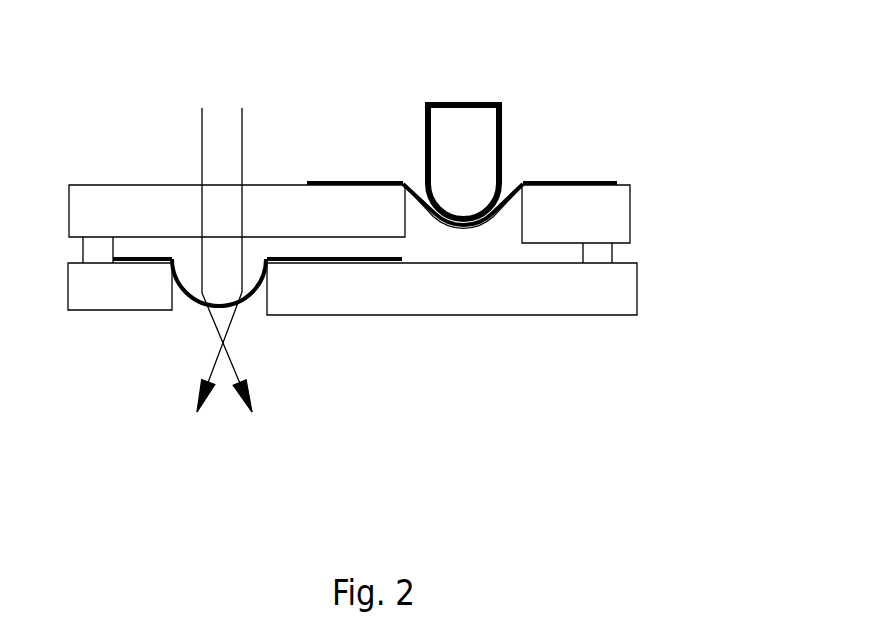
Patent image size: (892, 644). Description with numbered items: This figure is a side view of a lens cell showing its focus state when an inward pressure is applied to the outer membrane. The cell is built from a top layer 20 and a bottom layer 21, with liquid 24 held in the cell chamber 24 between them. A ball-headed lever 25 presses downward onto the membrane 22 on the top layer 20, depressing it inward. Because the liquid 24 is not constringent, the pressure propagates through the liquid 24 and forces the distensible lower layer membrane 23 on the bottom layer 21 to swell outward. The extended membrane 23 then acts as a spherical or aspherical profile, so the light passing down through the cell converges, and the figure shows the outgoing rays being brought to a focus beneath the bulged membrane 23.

The top layer 20 is at (621, 207).
The bottom layer 21 is at (624, 290).
The membrane 22 is at (589, 179).
The lower layer membrane 23 is at (253, 297).
The cell chamber liquid 24 is at (425, 324).
The ball-headed lever 25 is at (486, 124).